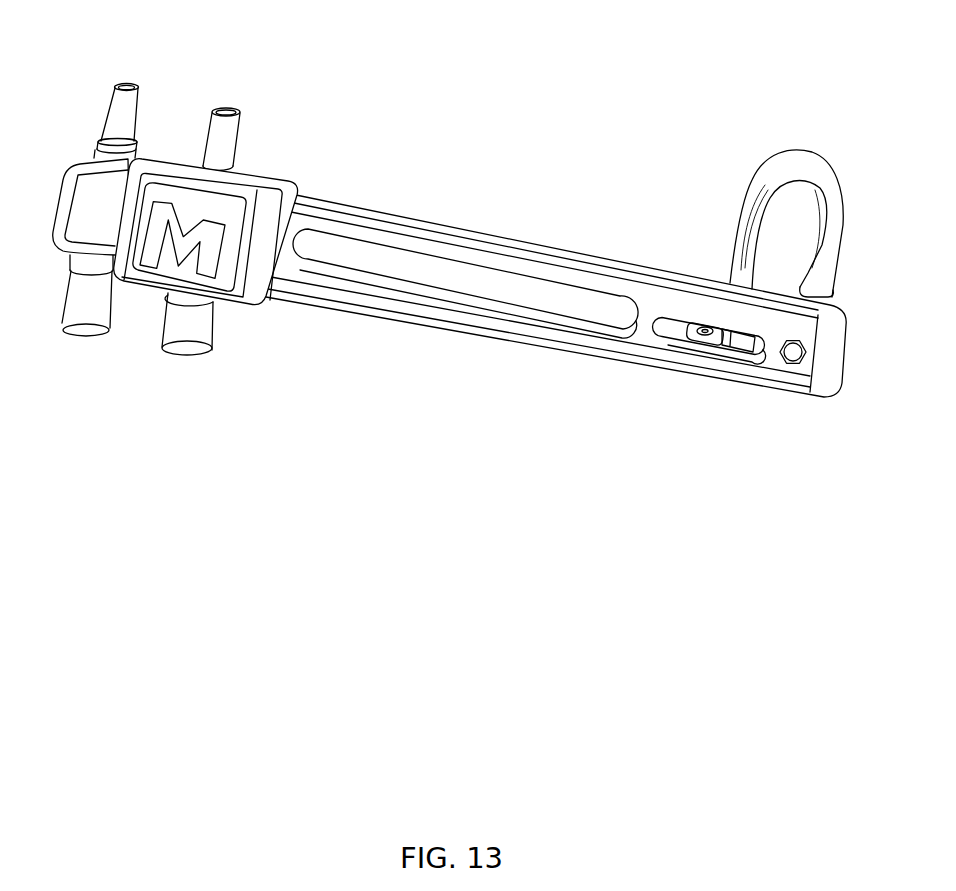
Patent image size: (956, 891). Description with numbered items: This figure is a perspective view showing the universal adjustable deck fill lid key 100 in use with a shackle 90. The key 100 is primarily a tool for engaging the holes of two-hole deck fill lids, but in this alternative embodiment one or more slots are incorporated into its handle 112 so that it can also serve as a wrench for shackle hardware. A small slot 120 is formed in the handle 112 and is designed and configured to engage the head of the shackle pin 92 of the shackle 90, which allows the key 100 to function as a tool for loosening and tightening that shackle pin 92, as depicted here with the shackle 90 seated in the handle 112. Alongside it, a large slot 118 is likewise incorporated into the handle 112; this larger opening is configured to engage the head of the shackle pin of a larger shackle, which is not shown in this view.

The universal adjustable deck fill lid key 100 is at (449, 241).
The shackle 90 is at (790, 153).
The shackle pin 92 is at (692, 338).
The handle 112 is at (556, 325).
The large slot 118 is at (523, 290).
The small slot 120 is at (688, 316).